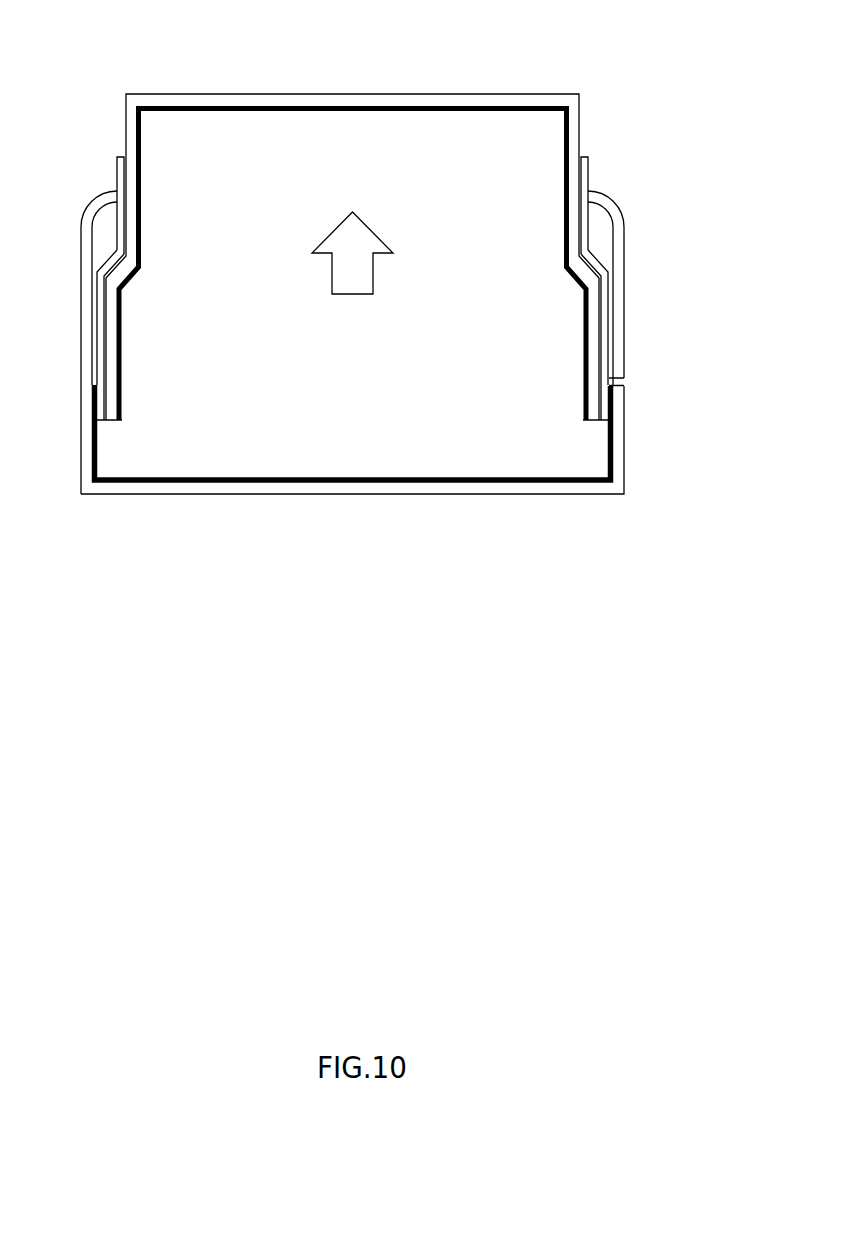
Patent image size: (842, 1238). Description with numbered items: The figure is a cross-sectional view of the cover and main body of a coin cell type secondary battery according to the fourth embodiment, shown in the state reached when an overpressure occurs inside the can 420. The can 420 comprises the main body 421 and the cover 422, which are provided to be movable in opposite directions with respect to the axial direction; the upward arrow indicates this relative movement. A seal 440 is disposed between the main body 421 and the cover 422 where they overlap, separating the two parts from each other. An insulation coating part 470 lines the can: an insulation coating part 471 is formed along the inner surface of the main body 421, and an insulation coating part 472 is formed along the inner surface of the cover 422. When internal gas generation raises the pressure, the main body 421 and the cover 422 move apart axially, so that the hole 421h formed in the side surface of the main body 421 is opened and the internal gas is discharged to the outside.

The can 420 is at (583, 589).
The main body 421 is at (348, 508).
The hole 421h is at (640, 382).
The cover 422 is at (353, 84).
The seal 440 is at (122, 155).
The insulation coating part 470 is at (210, 395).
The insulation coating part 471 is at (182, 477).
The insulation coating part 472 is at (123, 395).